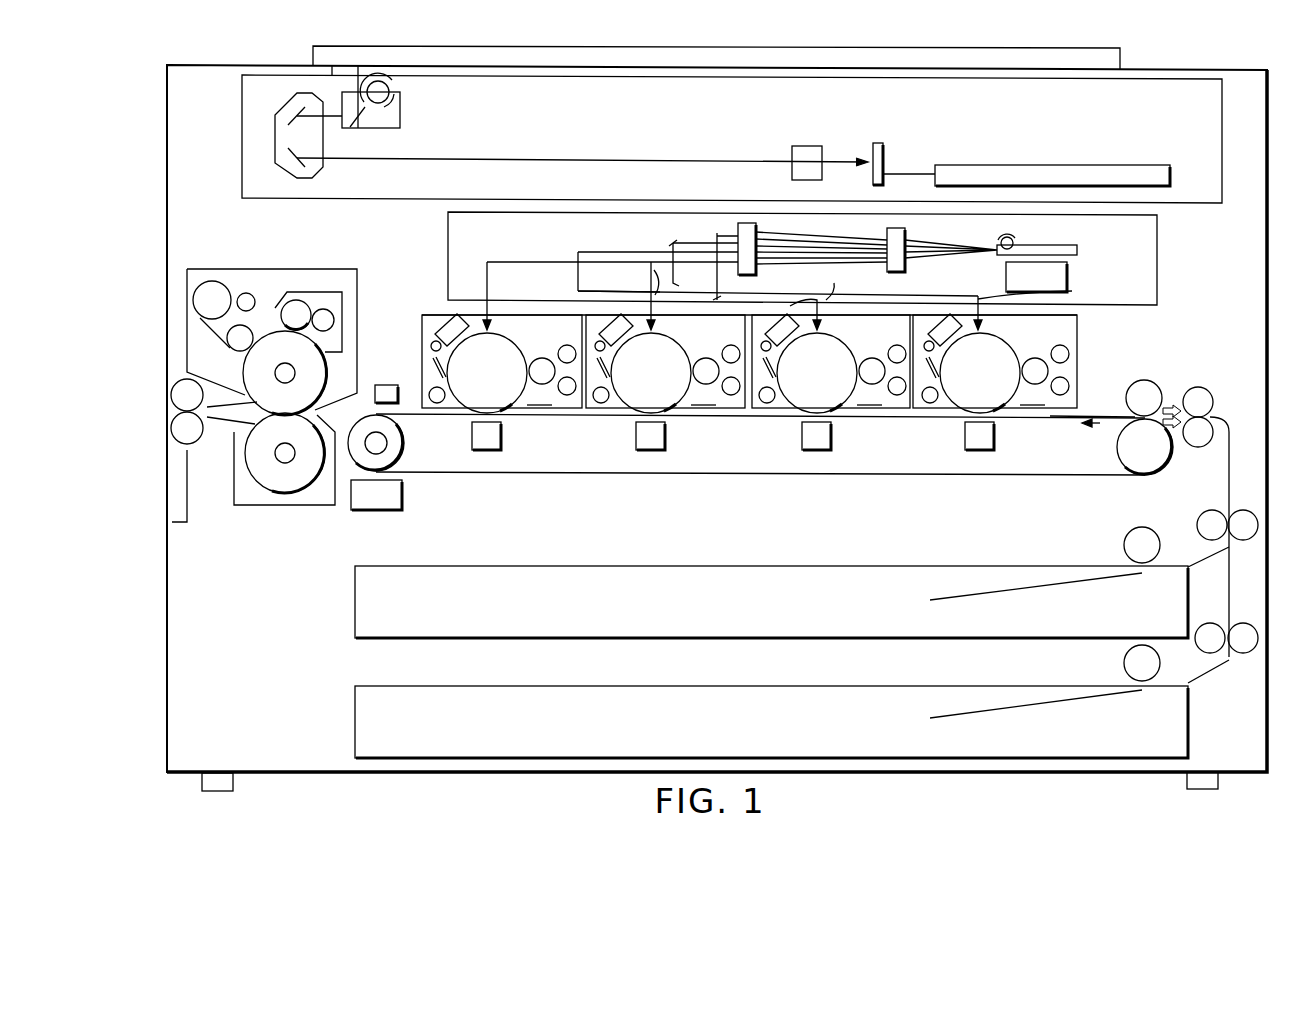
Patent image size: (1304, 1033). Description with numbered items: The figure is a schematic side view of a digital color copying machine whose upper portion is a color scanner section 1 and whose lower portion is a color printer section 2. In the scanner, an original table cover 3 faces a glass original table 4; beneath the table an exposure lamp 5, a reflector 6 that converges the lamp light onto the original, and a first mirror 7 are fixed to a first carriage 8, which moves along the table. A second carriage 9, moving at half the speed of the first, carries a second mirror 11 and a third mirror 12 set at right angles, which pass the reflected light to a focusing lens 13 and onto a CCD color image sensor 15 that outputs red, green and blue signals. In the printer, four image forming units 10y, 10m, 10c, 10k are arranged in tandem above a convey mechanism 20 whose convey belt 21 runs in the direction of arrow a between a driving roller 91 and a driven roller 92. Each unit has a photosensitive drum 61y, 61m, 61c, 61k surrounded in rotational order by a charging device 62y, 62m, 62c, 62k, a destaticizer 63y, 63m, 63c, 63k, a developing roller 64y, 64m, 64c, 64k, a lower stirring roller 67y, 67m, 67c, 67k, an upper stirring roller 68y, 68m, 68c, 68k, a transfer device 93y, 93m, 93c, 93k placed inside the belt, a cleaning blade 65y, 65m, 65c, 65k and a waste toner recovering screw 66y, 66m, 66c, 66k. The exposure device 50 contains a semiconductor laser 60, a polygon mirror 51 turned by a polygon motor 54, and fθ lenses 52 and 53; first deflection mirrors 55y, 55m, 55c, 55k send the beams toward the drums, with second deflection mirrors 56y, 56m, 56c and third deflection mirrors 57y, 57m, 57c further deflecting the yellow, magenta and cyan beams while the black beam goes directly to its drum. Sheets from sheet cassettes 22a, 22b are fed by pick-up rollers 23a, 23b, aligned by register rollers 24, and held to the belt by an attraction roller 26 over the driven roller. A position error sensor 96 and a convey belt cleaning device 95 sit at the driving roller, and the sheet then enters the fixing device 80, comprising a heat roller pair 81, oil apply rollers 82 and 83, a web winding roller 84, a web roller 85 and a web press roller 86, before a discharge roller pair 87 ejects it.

The color scanner section 1 is at (1190, 88).
The color printer section 2 is at (412, 252).
The original table cover 3 is at (1122, 53).
The original table 4 is at (1075, 79).
The exposure lamp 5 is at (392, 88).
The reflector 6 is at (400, 117).
The first mirror 7 is at (360, 122).
The first carriage 8 is at (402, 102).
The second carriage 9 is at (318, 172).
The second mirror 11 is at (293, 104).
The third mirror 12 is at (290, 162).
The focusing lens 13 is at (807, 146).
The CCD color image sensor 15 is at (877, 143).
The image forming unit 10k is at (518, 412).
The image forming unit 10c is at (680, 412).
The image forming unit 10m is at (832, 415).
The image forming unit 10y is at (1005, 415).
The convey mechanism 20 is at (1052, 468).
The convey belt 21 is at (1103, 416).
The arrow a is at (1100, 428).
The sheet cassette 22a is at (355, 603).
The sheet cassette 22b is at (355, 721).
The pick-up roller 23a is at (1124, 543).
The pick-up roller 23b is at (1124, 663).
The register rollers 24 is at (1200, 388).
The attraction roller 26 is at (1150, 381).
The exposure device 50 is at (1158, 250).
The polygon mirror 51 is at (1080, 250).
The fθ lens 52 is at (908, 231).
The fθ lens 53 is at (760, 226).
The polygon motor 54 is at (1070, 273).
The semiconductor laser 60 is at (1013, 239).
The first deflection mirror 55k is at (488, 260).
The first deflection mirror 55c is at (575, 250).
The first deflection mirror 55m is at (673, 243).
The first deflection mirror 55y is at (717, 236).
The second deflection mirror 56c is at (577, 293).
The second deflection mirror 56m is at (673, 245).
The second deflection mirror 56y is at (717, 300).
The third deflection mirror 57c is at (653, 267).
The third deflection mirror 57m is at (833, 298).
The third deflection mirror 57y is at (1048, 292).
The photosensitive drum 61k is at (507, 318).
The photosensitive drum 61c is at (678, 352).
The photosensitive drum 61m is at (838, 352).
The photosensitive drum 61y is at (1030, 350).
The charging device 62k is at (444, 318).
The charging device 62c is at (620, 318).
The charging device 62m is at (795, 325).
The charging device 62y is at (955, 318).
The destaticizer 63k is at (426, 343).
The destaticizer 63c is at (600, 340).
The destaticizer 63m is at (768, 340).
The destaticizer 63y is at (930, 340).
The developing roller 64k is at (546, 385).
The developing roller 64c is at (708, 386).
The developing roller 64m is at (872, 386).
The developing roller 64y is at (1037, 386).
The cleaning blade 65k is at (430, 362).
The cleaning blade 65c is at (602, 380).
The cleaning blade 65m is at (774, 382).
The cleaning blade 65y is at (928, 382).
The waste toner recovering screw 66k is at (428, 392).
The waste toner recovering screw 66c is at (602, 404).
The waste toner recovering screw 66m is at (767, 405).
The waste toner recovering screw 66y is at (934, 405).
The lower stirring roller 67k is at (566, 396).
The lower stirring roller 67c is at (733, 397).
The lower stirring roller 67m is at (897, 397).
The lower stirring roller 67y is at (1064, 397).
The upper stirring roller 68k is at (560, 350).
The upper stirring roller 68c is at (740, 365).
The upper stirring roller 68m is at (898, 346).
The upper stirring roller 68y is at (1071, 356).
The fixing device 80 is at (361, 303).
The heat roller pair 81 is at (285, 494).
The oil apply roller 82 is at (325, 309).
The oil apply roller 83 is at (297, 300).
The web winding roller 84 is at (247, 293).
The web roller 85 is at (213, 281).
The web press roller 86 is at (228, 350).
The discharge roller pair 87 is at (197, 444).
The driving roller 91 is at (397, 464).
The driven roller 92 is at (1122, 462).
The transfer device 93k is at (480, 452).
The transfer device 93c is at (645, 452).
The transfer device 93m is at (818, 455).
The transfer device 93y is at (977, 452).
The convey belt cleaning device 95 is at (380, 511).
The position error sensor 96 is at (390, 405).